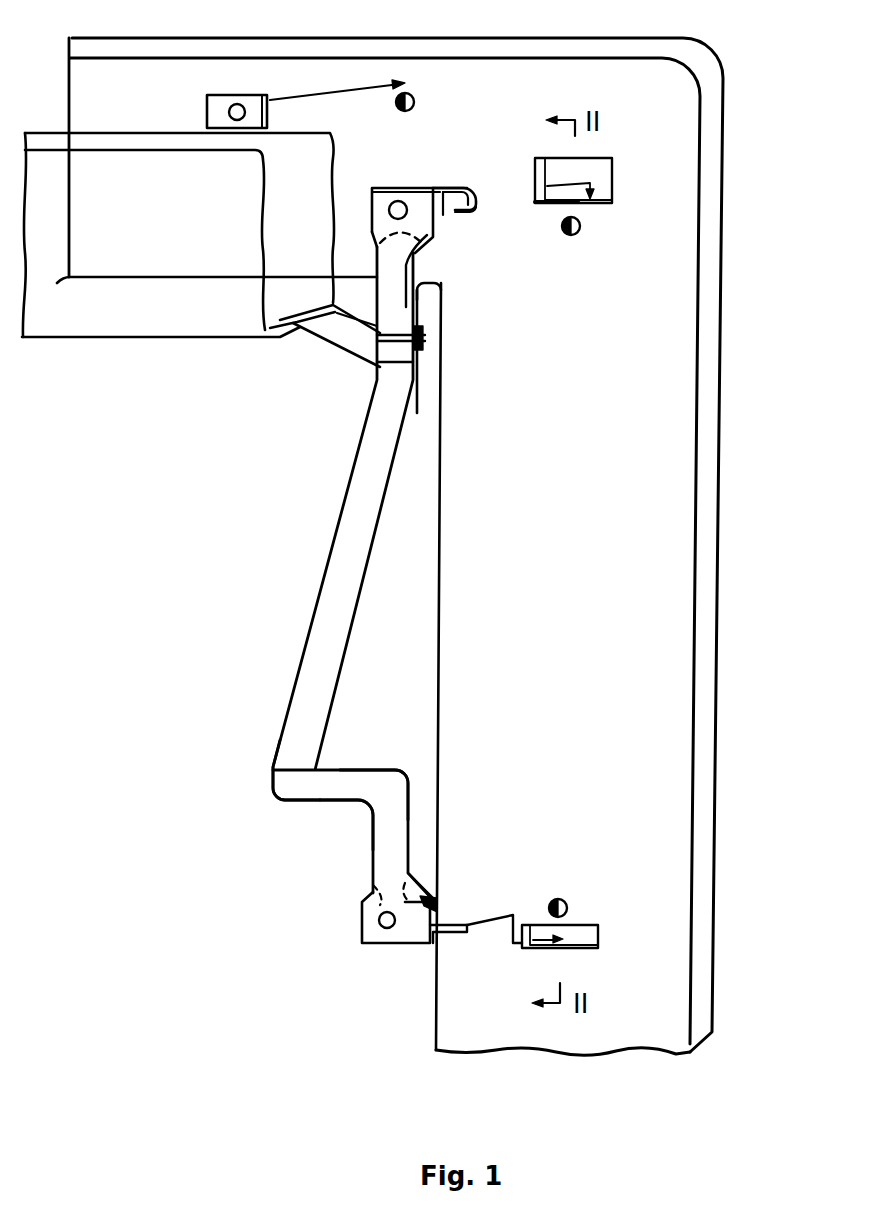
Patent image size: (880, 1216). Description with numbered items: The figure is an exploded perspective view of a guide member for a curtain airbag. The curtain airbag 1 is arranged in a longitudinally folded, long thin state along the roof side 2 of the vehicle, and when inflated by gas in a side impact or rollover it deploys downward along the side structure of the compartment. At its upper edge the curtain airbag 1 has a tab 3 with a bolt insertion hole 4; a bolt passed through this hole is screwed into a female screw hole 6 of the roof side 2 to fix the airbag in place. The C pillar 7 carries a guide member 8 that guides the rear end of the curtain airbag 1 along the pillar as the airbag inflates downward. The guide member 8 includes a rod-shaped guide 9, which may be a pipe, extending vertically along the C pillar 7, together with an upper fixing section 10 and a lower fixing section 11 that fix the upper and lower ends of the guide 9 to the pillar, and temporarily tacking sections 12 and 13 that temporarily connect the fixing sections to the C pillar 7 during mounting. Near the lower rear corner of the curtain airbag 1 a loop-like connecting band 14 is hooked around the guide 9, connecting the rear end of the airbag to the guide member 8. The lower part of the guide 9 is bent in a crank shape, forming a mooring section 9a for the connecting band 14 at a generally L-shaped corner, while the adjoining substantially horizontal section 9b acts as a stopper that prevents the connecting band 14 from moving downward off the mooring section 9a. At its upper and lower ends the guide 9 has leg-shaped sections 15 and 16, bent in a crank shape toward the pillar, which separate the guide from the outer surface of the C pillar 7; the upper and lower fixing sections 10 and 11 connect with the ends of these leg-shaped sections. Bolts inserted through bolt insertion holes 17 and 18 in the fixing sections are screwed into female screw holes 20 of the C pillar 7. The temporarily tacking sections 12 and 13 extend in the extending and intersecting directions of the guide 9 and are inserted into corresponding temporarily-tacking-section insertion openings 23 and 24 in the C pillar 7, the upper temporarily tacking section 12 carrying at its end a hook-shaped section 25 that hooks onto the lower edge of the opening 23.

The curtain airbag 1 is at (90, 320).
The roof side 2 is at (90, 100).
The tab 3 is at (205, 105).
The bolt insertion hole 4 is at (237, 100).
The female screw hole 6 is at (418, 97).
The C pillar 7 is at (664, 442).
The guide member 8 is at (426, 376).
The guide 9 is at (396, 503).
The mooring section 9a is at (273, 769).
The horizontal section 9b is at (352, 772).
The upper fixing section 10 is at (427, 238).
The lower fixing section 11 is at (432, 898).
The upper temporarily tacking section 12 is at (455, 186).
The lower temporarily tacking section 13 is at (454, 936).
The connecting band 14 is at (360, 358).
The upper leg-shaped section 15 is at (383, 248).
The lower leg-shaped section 16 is at (375, 887).
The bolt insertion hole 17 is at (380, 190).
The bolt insertion hole 18 is at (375, 920).
The female screw holes 20 is at (583, 228).
The temporarily-tacking-section insertion opening 23 is at (603, 157).
The temporarily-tacking-section insertion opening 24 is at (600, 925).
The hook-shaped section 25 is at (472, 213).